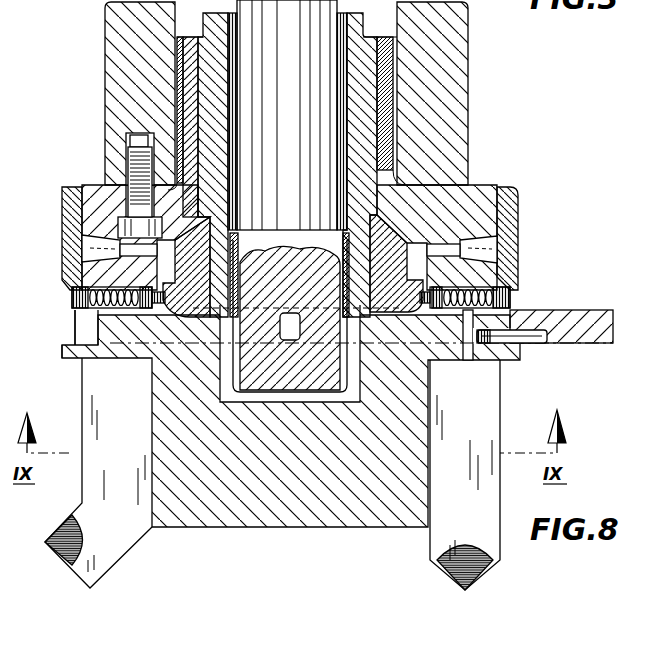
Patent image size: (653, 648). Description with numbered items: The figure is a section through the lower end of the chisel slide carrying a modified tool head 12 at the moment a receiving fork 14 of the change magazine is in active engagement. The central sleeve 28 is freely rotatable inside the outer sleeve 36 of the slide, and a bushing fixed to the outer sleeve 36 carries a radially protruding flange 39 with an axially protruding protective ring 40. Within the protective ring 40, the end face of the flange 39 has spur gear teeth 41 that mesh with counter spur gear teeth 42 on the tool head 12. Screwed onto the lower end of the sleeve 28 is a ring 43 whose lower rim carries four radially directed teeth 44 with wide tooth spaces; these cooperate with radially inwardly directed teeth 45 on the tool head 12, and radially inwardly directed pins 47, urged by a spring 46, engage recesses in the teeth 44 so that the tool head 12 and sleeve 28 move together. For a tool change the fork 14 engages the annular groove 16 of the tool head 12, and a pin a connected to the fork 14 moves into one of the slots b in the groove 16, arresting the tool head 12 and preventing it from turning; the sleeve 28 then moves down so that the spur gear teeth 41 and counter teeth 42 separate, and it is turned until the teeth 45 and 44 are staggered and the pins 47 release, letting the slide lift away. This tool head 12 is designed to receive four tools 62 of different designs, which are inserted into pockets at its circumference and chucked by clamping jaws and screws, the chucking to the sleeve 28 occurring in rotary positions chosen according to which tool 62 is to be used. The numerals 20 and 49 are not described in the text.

The tool head 12 is at (260, 503).
The fork 14 is at (587, 317).
The annular groove 16 is at (60, 325).
The spindle 20 is at (302, 58).
The sleeve 28 is at (363, 117).
The outer sleeve 36 is at (127, 80).
The flange 39 is at (478, 197).
The protective ring 40 is at (510, 197).
The spur gear teeth 41 is at (503, 240).
The counter spur gear teeth 42 is at (503, 257).
The ring 43 is at (345, 215).
The teeth 44 is at (415, 318).
The teeth 45 is at (368, 258).
The spring 46 is at (108, 292).
The pins 47 is at (158, 303).
The spring 49 is at (70, 297).
The tools 62 is at (105, 412).
The pin a is at (537, 343).
The slots b is at (495, 345).